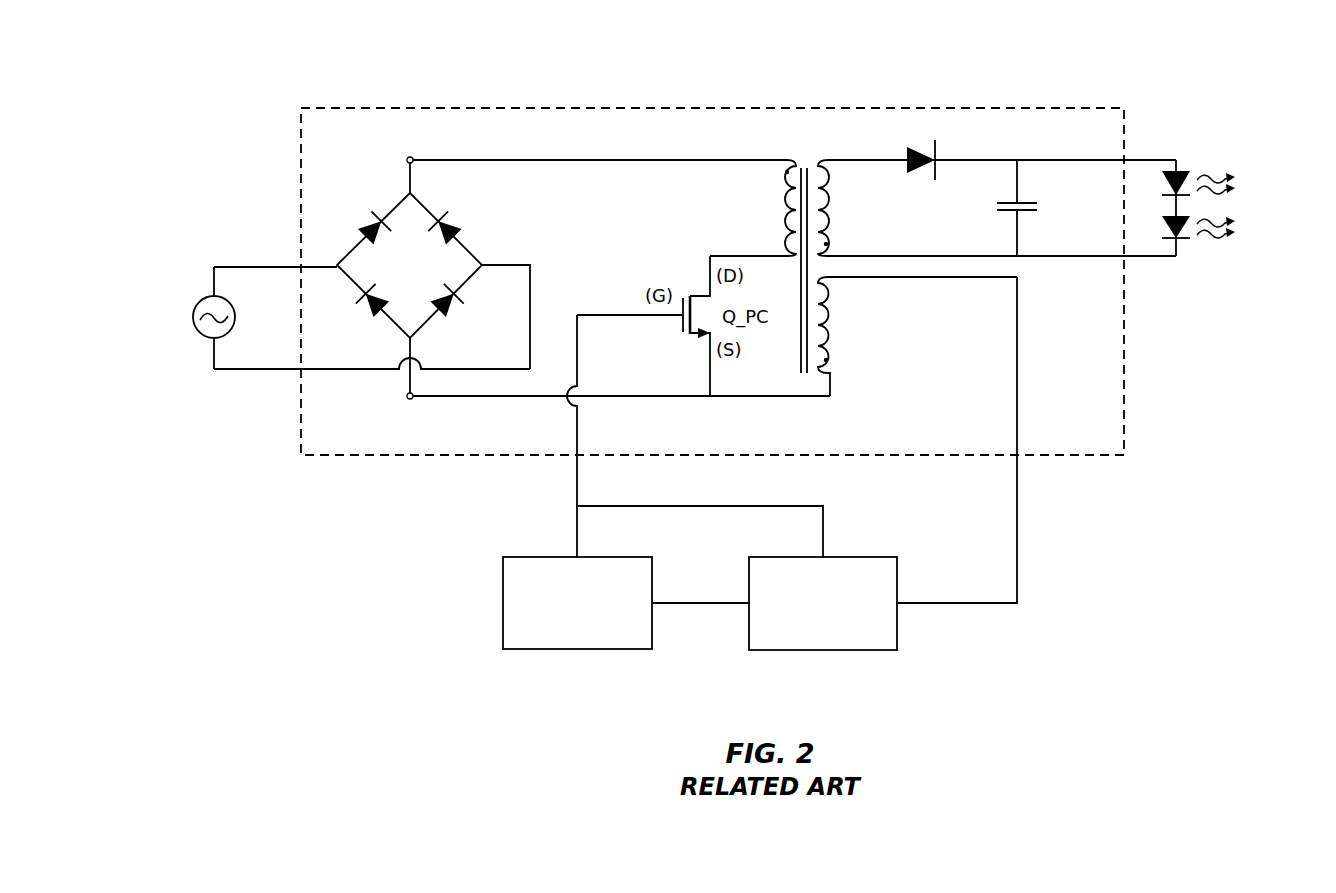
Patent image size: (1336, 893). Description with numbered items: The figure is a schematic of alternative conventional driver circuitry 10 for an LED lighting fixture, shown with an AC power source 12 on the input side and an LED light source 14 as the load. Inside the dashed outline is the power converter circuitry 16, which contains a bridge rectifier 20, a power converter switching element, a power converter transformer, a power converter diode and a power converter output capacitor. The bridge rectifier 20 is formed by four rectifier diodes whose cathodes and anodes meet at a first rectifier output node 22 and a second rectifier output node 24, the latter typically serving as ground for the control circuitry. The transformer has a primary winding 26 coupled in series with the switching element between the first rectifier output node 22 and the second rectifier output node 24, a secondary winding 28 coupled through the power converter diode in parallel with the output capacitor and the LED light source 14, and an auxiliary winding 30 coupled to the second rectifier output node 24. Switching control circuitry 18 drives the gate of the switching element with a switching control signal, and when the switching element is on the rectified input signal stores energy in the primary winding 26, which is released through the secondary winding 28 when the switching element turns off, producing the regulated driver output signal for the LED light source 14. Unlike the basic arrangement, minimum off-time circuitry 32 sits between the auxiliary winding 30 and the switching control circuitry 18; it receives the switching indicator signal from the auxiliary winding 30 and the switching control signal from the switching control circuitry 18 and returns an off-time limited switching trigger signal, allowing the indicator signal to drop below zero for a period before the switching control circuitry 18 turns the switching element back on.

The conventional driver circuitry 10 is at (724, 74).
The AC power source 12 is at (193, 315).
The LED light source 14 is at (1219, 160).
The power converter circuitry 16 is at (1113, 444).
The switching control circuitry 18 is at (546, 650).
The bridge rectifier 20 is at (385, 175).
The first rectifier output node 22 is at (411, 156).
The second rectifier output node 24 is at (409, 400).
The primary winding 26 is at (767, 249).
The secondary winding 28 is at (997, 193).
The auxiliary winding 30 is at (917, 336).
The minimum off-time circuitry 32 is at (797, 650).